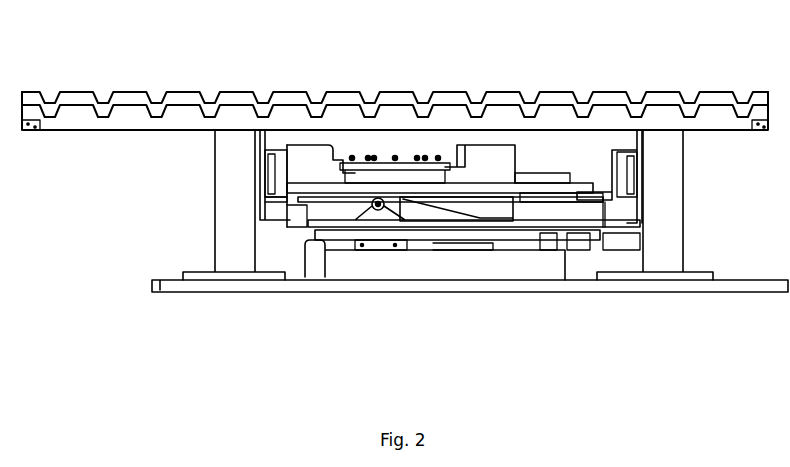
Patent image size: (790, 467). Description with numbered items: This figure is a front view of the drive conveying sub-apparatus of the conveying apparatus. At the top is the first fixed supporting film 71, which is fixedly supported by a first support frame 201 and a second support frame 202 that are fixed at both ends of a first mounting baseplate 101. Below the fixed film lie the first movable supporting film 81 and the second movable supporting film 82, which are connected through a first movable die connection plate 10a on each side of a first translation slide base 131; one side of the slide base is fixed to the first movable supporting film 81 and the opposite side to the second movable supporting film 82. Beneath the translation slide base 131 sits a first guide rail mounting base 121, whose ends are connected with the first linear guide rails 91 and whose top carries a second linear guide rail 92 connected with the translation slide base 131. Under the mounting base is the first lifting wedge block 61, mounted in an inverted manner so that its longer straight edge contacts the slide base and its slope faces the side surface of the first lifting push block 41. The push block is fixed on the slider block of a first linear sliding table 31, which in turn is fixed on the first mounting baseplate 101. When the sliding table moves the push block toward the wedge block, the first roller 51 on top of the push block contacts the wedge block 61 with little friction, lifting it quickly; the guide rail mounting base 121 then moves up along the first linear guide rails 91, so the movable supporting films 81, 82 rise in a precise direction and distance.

The first fixed supporting film 71 is at (77, 100).
The first movable supporting film 81 is at (395, 77).
The second movable supporting film 82 is at (175, 127).
The first linear guide rail 91 is at (278, 147).
The first movable die connection plate 10a is at (372, 145).
The first translation slide base 131 is at (397, 155).
The second linear guide rail 92 is at (424, 177).
The first guide rail mounting base 121 is at (507, 190).
The first lifting wedge block 61 is at (501, 212).
The first roller 51 is at (372, 212).
The first lifting push block 41 is at (385, 215).
The first linear sliding table 31 is at (436, 266).
The first mounting baseplate 101 is at (170, 288).
The first support frame 201 is at (240, 233).
The second support frame 202 is at (668, 233).